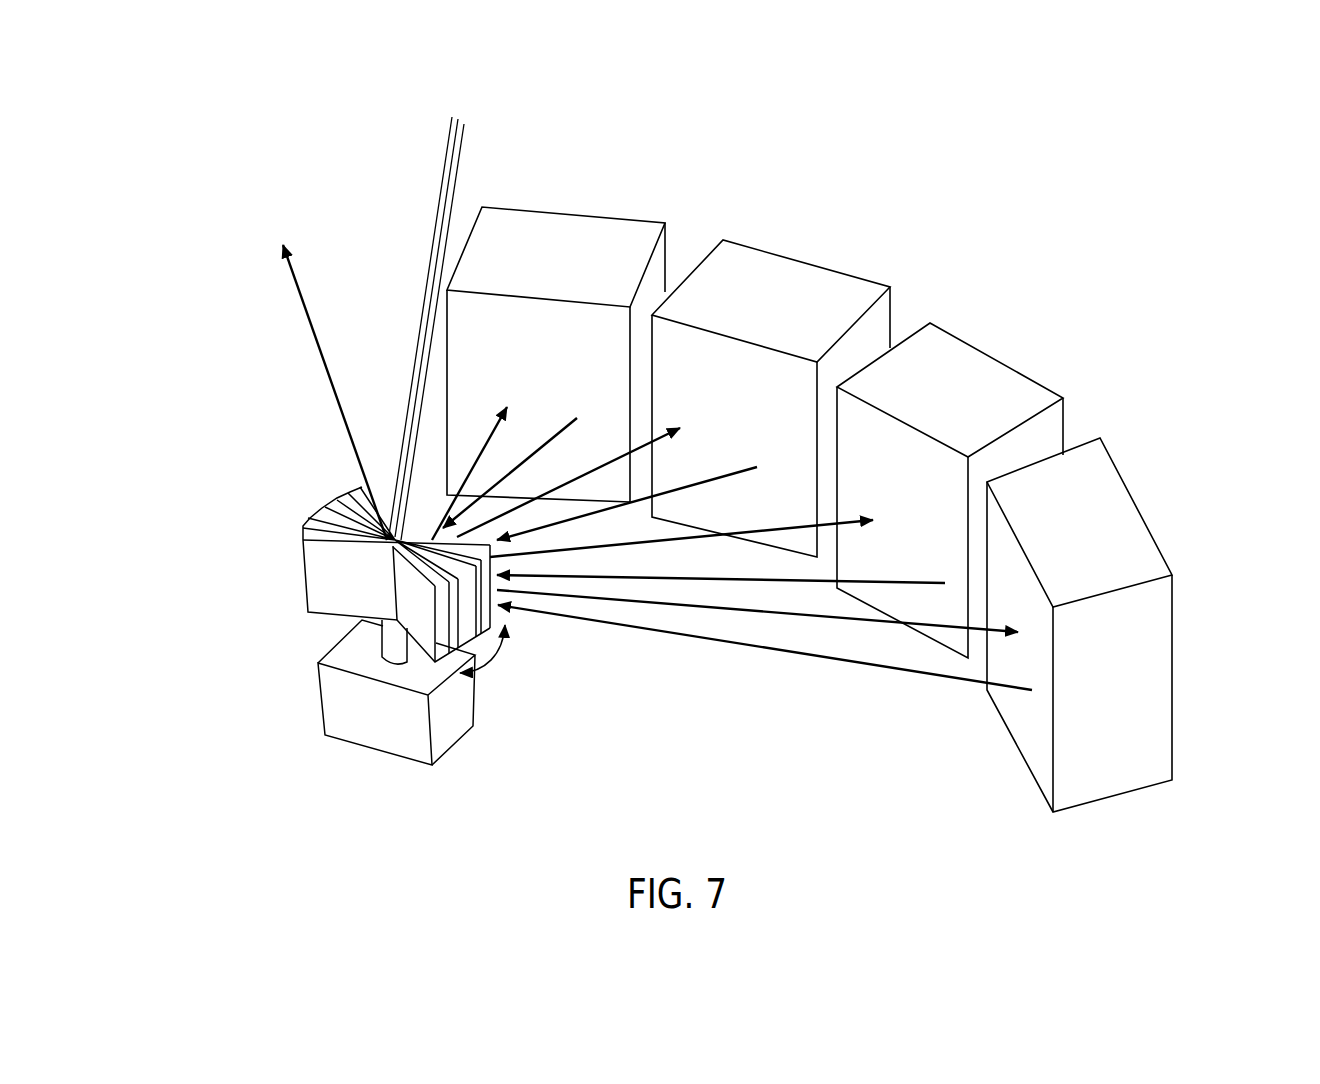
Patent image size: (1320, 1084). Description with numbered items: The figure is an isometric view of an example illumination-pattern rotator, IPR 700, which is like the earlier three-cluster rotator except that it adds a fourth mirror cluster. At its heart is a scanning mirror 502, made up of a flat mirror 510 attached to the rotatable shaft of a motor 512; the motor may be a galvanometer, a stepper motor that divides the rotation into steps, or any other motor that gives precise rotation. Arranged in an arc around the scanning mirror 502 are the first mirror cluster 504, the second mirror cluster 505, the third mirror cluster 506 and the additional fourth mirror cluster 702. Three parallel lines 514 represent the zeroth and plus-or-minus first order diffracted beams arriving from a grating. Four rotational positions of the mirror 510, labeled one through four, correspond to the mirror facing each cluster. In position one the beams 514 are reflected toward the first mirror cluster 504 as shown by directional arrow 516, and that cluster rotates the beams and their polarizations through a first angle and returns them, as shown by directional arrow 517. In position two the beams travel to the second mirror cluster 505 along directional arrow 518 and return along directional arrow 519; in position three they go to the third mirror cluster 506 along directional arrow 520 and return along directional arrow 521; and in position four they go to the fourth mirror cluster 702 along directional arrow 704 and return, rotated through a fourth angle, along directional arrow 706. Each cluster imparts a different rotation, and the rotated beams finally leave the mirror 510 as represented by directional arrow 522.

The illumination-pattern rotator 700 is at (1093, 205).
The scanning mirror 502 is at (431, 658).
The mirror cluster 1 504 is at (572, 213).
The mirror cluster 2 505 is at (800, 255).
The mirror cluster 3 506 is at (980, 348).
The mirror cluster 4 702 is at (1140, 510).
The mirror 510 is at (305, 577).
The motor 512 is at (352, 722).
The three parallel lines 514 is at (475, 135).
The directional arrow 516 is at (487, 437).
The directional arrow 517 is at (545, 440).
The directional arrow 518 is at (662, 428).
The directional arrow 519 is at (720, 478).
The directional arrow 520 is at (848, 517).
The directional arrow 521 is at (907, 580).
The directional arrow 522 is at (336, 392).
The directional arrow 704 is at (995, 628).
The directional arrow 706 is at (846, 668).